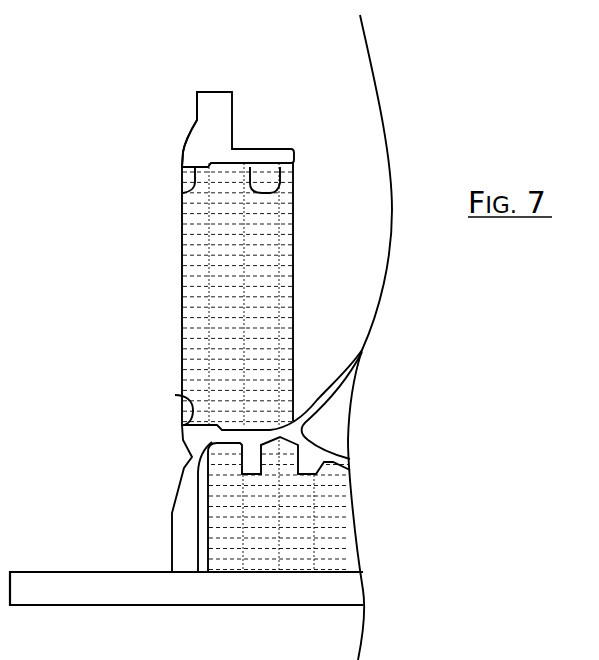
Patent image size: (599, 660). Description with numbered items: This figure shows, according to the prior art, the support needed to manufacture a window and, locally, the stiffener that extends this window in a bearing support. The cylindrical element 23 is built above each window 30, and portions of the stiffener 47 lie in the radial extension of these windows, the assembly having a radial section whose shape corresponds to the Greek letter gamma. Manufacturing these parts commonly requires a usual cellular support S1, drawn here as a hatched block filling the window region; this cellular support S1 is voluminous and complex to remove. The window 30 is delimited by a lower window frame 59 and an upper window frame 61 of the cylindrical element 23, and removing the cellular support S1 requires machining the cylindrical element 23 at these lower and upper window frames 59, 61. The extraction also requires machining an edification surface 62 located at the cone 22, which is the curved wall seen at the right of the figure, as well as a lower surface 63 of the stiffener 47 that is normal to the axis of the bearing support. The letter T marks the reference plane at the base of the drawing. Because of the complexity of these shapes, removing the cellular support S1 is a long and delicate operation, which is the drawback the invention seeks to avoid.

The cone 22 is at (342, 378).
The cylindrical element 23 is at (195, 123).
The window 30 is at (180, 167).
The stiffener 47 is at (263, 150).
The lower window frame 59 is at (175, 395).
The upper window frame 61 is at (183, 193).
The edification surface 62 is at (292, 413).
The lower surface of stiffener 63 is at (275, 191).
The cellular support S1 is at (316, 284).
The axis T is at (186, 588).